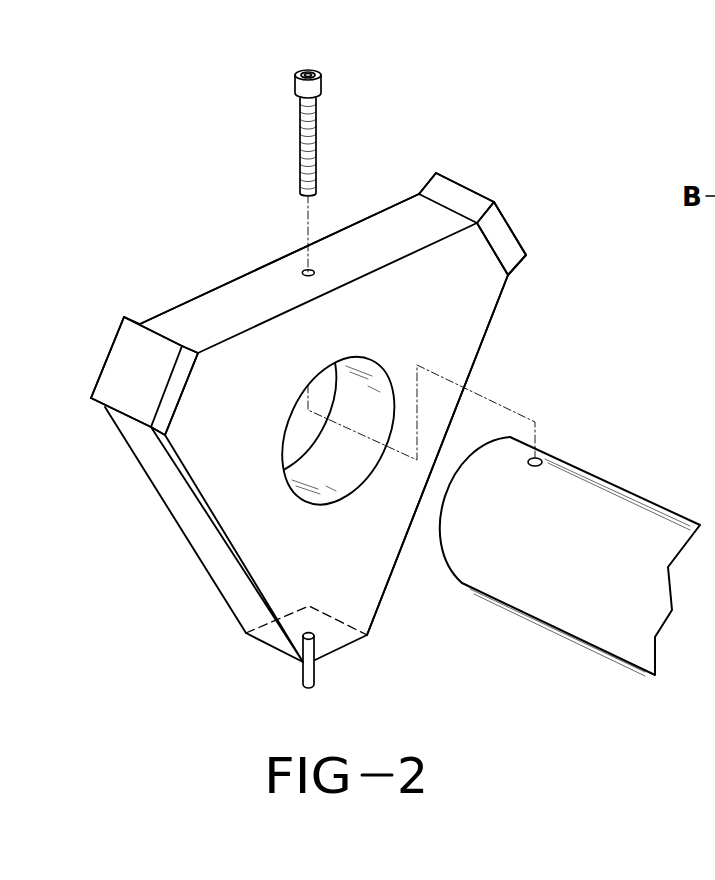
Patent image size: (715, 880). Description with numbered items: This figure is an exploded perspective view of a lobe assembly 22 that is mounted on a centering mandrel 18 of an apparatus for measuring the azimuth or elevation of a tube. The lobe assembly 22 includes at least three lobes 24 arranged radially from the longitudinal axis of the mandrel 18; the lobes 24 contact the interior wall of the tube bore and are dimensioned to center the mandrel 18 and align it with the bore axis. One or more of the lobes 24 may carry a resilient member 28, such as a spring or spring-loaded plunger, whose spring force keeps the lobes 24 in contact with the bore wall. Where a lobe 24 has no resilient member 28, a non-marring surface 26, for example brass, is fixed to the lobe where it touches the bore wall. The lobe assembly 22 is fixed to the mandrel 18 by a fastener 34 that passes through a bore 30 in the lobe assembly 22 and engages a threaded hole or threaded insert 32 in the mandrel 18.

The centering mandrel 18 is at (672, 507).
The lobe assembly 22 is at (142, 471).
The lobe 24 is at (417, 212).
The non-marring surface 26 is at (120, 348).
The resilient member 28 is at (300, 677).
The bore 30 is at (305, 270).
The threaded hole or threaded insert 32 is at (540, 456).
The fastener 34 is at (302, 112).